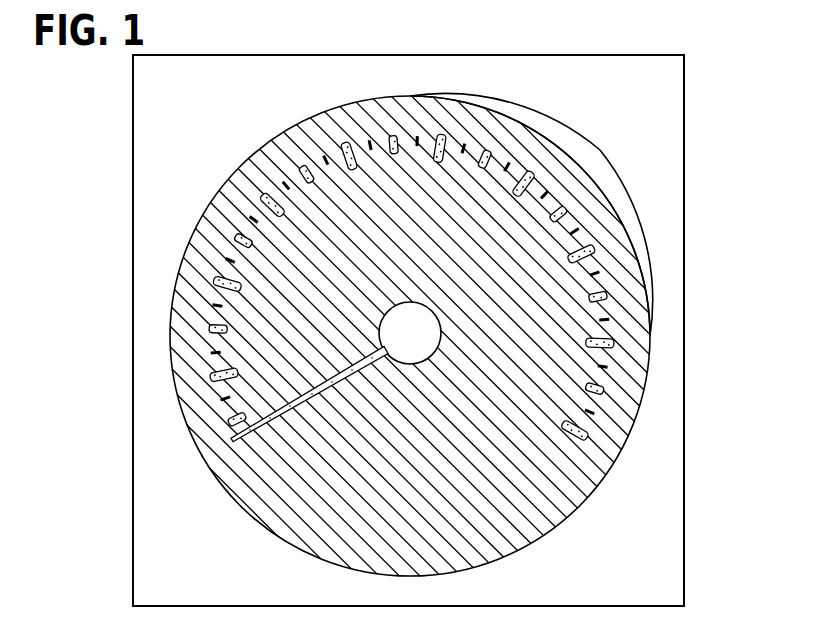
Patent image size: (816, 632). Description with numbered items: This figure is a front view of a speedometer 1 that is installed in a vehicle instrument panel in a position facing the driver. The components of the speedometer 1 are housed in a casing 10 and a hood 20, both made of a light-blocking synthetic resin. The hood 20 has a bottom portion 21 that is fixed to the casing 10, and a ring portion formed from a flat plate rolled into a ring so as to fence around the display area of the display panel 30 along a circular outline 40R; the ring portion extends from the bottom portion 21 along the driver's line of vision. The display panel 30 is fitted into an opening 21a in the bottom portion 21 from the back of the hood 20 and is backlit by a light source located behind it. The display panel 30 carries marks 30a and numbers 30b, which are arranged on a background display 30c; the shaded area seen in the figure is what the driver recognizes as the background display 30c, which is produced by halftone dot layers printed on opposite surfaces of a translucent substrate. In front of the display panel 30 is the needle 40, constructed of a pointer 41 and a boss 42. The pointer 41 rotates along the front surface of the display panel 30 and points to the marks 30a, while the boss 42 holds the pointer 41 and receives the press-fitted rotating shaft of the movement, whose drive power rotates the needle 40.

The speedometer 1 is at (70, 129).
The casing 10 is at (688, 360).
The hood 20 is at (400, 316).
The bottom portion 21 is at (657, 230).
The opening 21a is at (633, 273).
The display panel 30 is at (357, 316).
The marks 30a is at (213, 374).
The numbers 30b is at (227, 402).
The background display 30c is at (273, 453).
The needle 40 is at (350, 368).
The circular outline 40R is at (497, 112).
The pointer 41 is at (356, 378).
The boss 42 is at (428, 322).